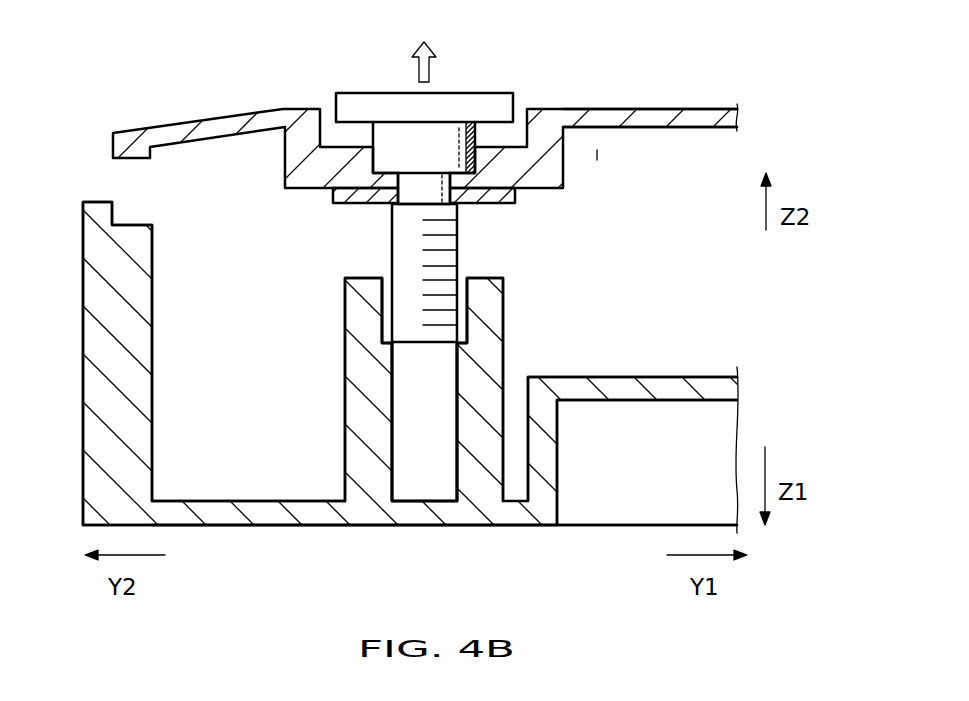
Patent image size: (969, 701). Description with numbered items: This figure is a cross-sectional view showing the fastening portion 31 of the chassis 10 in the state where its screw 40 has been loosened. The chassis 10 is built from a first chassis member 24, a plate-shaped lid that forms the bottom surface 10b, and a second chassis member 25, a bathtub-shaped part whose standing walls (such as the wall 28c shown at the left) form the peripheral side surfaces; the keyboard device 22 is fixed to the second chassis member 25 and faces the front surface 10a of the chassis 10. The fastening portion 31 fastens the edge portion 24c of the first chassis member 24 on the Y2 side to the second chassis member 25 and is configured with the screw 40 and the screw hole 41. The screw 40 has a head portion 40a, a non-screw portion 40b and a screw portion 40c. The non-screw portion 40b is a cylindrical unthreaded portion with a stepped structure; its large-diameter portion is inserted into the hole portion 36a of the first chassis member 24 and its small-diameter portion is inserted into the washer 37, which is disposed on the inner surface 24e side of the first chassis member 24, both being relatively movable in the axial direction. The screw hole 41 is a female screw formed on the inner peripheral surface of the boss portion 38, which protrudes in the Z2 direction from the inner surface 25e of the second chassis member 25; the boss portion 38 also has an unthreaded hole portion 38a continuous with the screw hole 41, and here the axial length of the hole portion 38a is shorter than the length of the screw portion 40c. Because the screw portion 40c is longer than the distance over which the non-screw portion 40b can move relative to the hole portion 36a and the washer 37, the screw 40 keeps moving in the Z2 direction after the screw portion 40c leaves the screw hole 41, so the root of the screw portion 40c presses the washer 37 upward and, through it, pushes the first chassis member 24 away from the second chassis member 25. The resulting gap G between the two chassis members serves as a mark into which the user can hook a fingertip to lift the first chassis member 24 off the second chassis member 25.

The chassis 10 is at (73, 101).
The front surface 10a is at (648, 108).
The bottom surface 10b is at (318, 528).
The keyboard device 22 is at (615, 502).
The first chassis member 24 is at (702, 97).
The edge portion 24c is at (288, 98).
The inner surface 24e is at (660, 128).
The second chassis member 25 is at (233, 538).
The inner surface 25e is at (203, 500).
The side wall 28c is at (113, 390).
The fastening portion 31 is at (526, 65).
The hole portion 36a is at (468, 160).
The washer 37 is at (515, 193).
The boss portion 38 is at (345, 402).
The hole portion 38a is at (462, 313).
The screw 40 is at (338, 80).
The head portion 40a is at (387, 108).
The non-screw portion 40b is at (419, 188).
The screw portion 40c is at (408, 259).
The screw hole 41 is at (396, 440).
The gap G is at (597, 160).